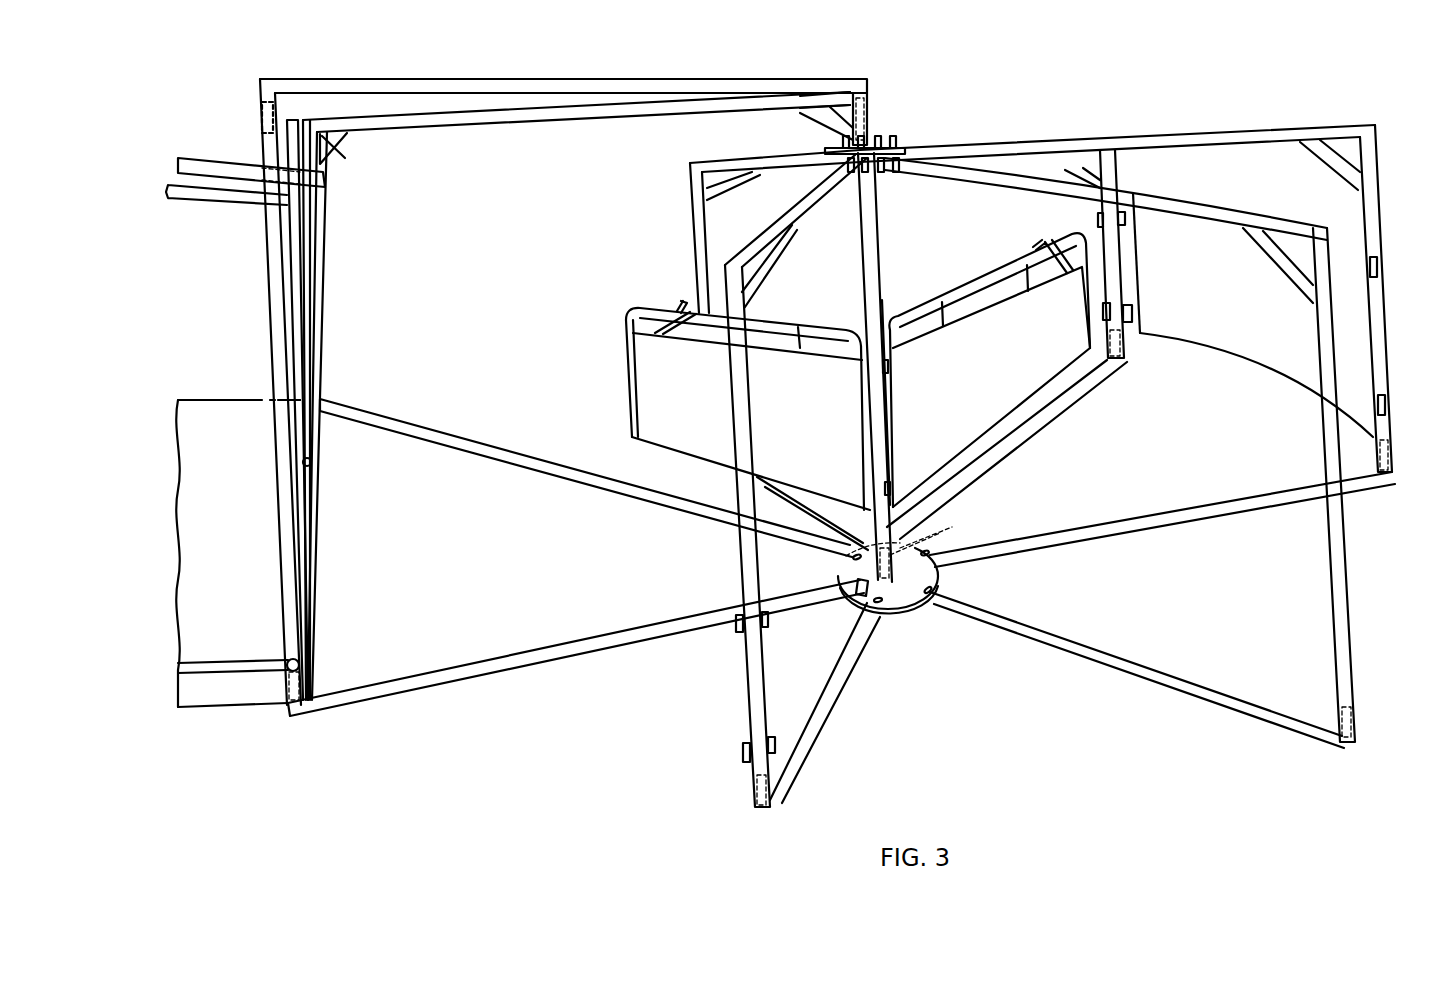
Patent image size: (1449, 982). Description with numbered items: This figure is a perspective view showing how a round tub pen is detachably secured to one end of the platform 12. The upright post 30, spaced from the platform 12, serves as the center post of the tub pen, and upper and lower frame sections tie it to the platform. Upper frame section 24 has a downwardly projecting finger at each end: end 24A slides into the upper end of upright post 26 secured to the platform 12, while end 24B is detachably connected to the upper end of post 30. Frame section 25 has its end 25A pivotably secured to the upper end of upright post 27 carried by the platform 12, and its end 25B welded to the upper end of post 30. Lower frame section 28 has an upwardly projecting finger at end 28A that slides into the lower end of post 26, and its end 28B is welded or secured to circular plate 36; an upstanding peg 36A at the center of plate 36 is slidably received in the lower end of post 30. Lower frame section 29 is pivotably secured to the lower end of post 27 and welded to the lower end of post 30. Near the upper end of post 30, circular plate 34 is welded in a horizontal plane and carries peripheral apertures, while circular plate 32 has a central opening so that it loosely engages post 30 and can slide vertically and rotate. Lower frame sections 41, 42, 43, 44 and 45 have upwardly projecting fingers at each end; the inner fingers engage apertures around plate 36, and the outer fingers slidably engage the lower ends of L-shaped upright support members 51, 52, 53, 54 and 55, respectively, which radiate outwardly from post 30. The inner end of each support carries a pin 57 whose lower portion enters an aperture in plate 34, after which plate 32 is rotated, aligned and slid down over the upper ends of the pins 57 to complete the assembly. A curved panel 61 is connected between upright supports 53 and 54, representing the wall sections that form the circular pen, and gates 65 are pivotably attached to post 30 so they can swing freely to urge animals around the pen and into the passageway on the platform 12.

The platform 12 is at (258, 700).
The upper frame section 24 is at (381, 79).
The end of upper frame section 24A is at (262, 100).
The end of upper frame section 24B is at (862, 84).
The frame section 25 is at (481, 113).
The end of frame section 25A is at (330, 140).
The end of frame section 25B is at (808, 101).
The upright post 26 is at (272, 285).
The upright post 27 is at (322, 275).
The lower frame section 28 is at (566, 646).
The end of lower frame section 28A is at (298, 712).
The end of lower frame section 28B is at (860, 602).
The lower frame section 29 is at (452, 437).
The upright post 30 is at (877, 246).
The circular plate 32 is at (908, 148).
The circular plate 34 is at (884, 172).
The circular plate 36 is at (905, 608).
The peg 36A is at (946, 529).
The lower frame section 41 is at (822, 705).
The lower frame section 42 is at (1122, 660).
The lower frame section 43 is at (1104, 524).
The lower frame section 44 is at (1040, 433).
The lower frame section 45 is at (815, 502).
The L-shaped upright support member 51 is at (740, 492).
The L-shaped upright support member 52 is at (1345, 555).
The L-shaped upright support member 53 is at (1390, 345).
The L-shaped upright support member 54 is at (1117, 275).
The L-shaped upright support member 55 is at (692, 232).
The pin 57 is at (890, 134).
The curved panel 61 is at (1262, 362).
The gate 65 is at (628, 372).